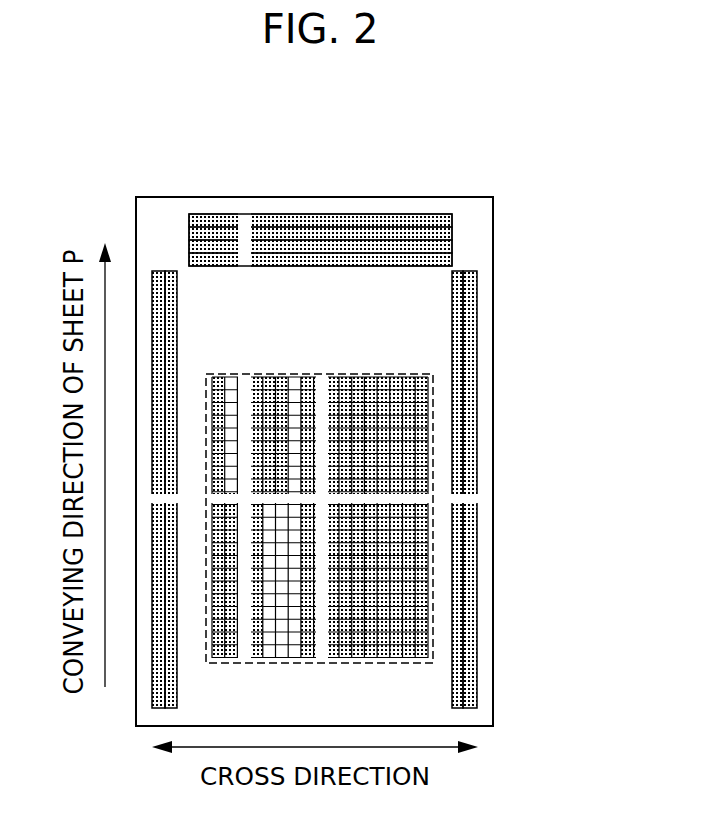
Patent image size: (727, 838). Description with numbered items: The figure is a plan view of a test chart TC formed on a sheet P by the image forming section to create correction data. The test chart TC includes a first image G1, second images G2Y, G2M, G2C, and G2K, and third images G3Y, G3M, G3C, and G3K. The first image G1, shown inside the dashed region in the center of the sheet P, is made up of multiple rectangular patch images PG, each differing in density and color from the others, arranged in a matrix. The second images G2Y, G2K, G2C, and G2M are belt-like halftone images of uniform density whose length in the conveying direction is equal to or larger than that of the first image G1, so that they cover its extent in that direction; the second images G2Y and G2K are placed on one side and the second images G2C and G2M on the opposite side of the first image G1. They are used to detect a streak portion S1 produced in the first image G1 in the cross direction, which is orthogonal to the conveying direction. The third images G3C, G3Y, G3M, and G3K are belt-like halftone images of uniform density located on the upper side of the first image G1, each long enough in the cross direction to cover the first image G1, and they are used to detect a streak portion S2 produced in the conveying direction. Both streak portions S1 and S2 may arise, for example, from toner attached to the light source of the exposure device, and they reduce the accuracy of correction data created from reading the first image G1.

The test chart TC is at (378, 213).
The third image G3C is at (448, 219).
The third image G3Y is at (448, 233).
The third image G3M is at (448, 246).
The third image G3K is at (448, 258).
The second image G2Y is at (158, 300).
The second image G2K is at (173, 328).
The second image G2C is at (458, 325).
The second image G2M is at (472, 357).
The streak portion S2 is at (245, 388).
The streak portion S1 is at (422, 498).
The first image G1 is at (382, 371).
The patch image PG is at (372, 657).
The sheet P is at (485, 717).